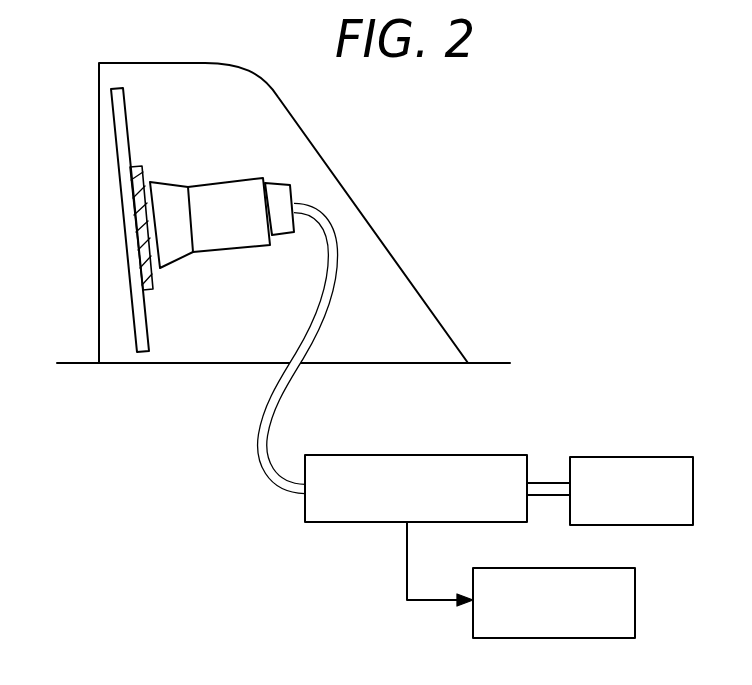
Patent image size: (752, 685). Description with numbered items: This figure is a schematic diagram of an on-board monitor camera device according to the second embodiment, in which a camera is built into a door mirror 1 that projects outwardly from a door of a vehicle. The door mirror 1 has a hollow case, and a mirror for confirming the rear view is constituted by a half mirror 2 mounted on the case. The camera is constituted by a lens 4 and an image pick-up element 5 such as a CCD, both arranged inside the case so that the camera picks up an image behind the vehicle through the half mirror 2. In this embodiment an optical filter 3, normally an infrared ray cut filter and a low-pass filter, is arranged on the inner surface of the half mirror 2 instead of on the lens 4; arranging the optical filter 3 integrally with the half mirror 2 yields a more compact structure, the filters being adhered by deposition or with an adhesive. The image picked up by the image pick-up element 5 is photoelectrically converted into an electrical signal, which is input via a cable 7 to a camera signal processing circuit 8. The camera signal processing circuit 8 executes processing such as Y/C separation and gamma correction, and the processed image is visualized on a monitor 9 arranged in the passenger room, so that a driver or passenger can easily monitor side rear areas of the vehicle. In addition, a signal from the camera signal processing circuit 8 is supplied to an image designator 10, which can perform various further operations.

The door mirror 1 is at (345, 212).
The half mirror 2 is at (118, 130).
The optical filter 3 is at (152, 283).
The lens 4 is at (167, 202).
The image pick-up element 5 is at (280, 192).
The cable 7 is at (338, 293).
The camera signal processing circuit 8 is at (505, 455).
The monitor 9 is at (672, 457).
The image designator 10 is at (620, 568).